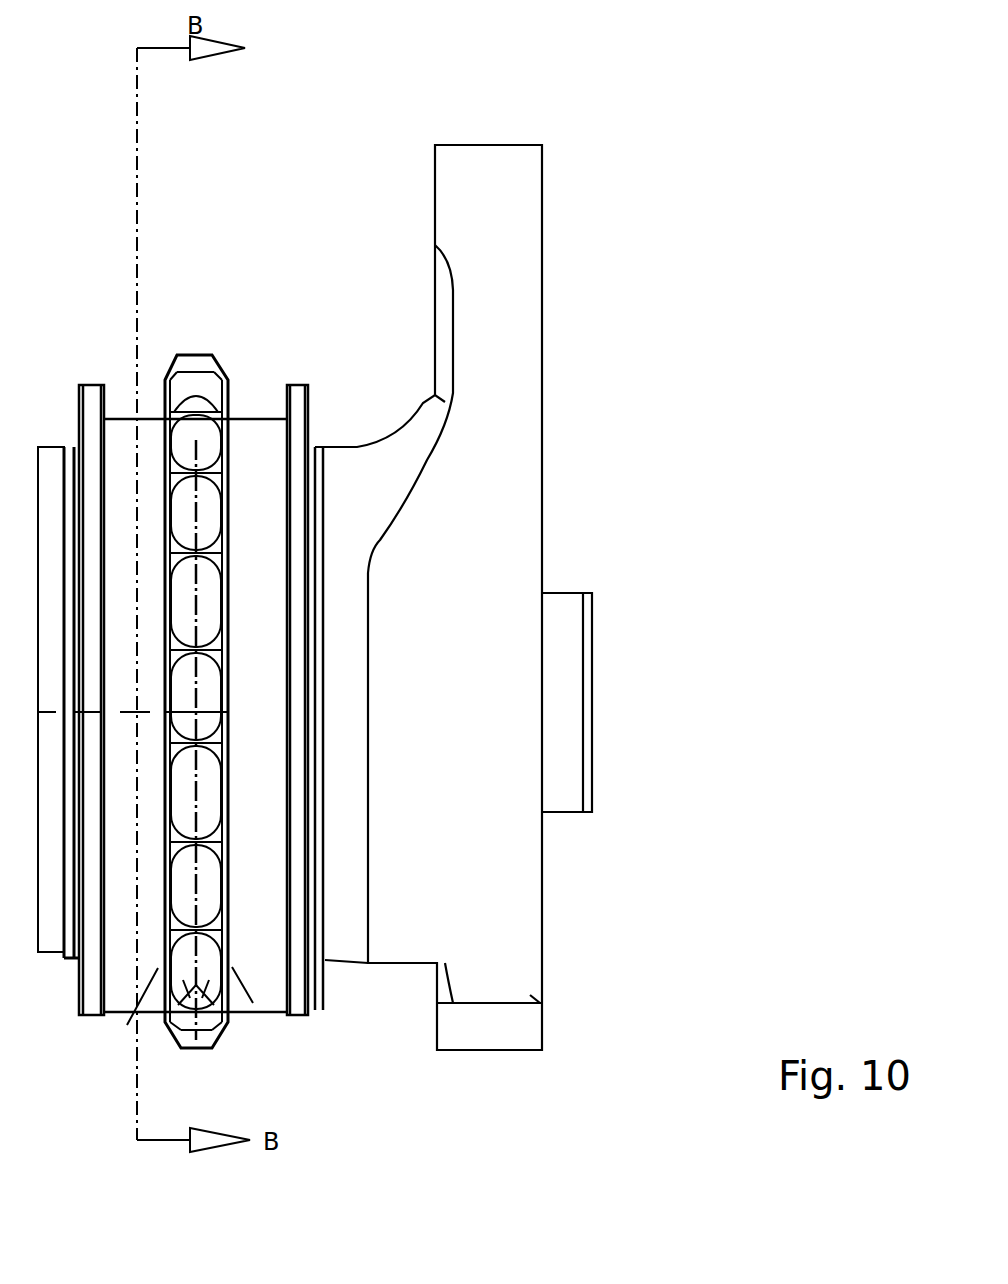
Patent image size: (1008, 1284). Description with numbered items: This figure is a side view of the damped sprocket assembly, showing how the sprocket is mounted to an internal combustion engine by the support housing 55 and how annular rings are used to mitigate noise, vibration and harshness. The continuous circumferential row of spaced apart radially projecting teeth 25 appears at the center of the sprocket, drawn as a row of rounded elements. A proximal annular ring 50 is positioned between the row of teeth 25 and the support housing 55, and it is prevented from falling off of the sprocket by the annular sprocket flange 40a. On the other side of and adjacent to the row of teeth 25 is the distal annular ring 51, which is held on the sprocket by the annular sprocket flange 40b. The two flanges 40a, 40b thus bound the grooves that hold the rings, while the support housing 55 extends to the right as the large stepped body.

The teeth 25 is at (190, 370).
The proximal annular ring 50 is at (250, 447).
The distal annular ring 51 is at (127, 430).
The annular sprocket flange 40a is at (298, 405).
The annular sprocket flange 40b is at (88, 1002).
The support housing 55 is at (468, 522).